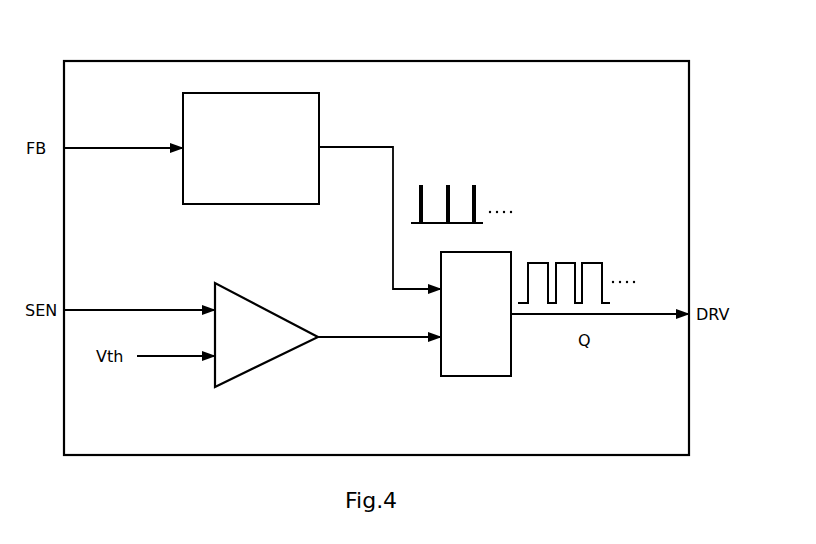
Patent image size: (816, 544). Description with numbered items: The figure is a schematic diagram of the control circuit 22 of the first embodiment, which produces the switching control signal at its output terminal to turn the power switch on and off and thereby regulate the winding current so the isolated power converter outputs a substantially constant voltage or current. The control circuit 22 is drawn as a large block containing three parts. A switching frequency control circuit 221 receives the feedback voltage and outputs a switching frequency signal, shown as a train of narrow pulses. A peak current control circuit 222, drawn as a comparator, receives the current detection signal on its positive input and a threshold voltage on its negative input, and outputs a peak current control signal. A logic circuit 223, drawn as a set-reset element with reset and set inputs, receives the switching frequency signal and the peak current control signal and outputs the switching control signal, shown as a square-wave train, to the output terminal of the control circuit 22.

The control circuit 22 is at (556, 61).
The switching frequency control circuit 221 is at (251, 148).
The peak current control circuit 222 is at (253, 302).
The logic circuit 223 is at (483, 376).